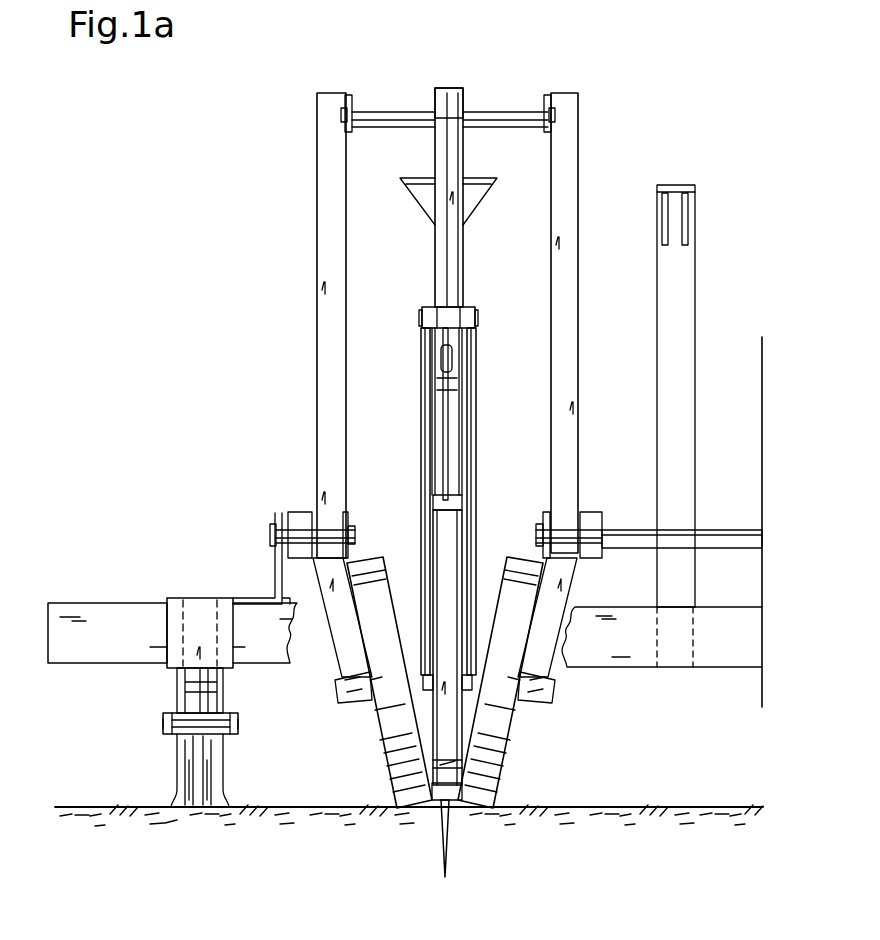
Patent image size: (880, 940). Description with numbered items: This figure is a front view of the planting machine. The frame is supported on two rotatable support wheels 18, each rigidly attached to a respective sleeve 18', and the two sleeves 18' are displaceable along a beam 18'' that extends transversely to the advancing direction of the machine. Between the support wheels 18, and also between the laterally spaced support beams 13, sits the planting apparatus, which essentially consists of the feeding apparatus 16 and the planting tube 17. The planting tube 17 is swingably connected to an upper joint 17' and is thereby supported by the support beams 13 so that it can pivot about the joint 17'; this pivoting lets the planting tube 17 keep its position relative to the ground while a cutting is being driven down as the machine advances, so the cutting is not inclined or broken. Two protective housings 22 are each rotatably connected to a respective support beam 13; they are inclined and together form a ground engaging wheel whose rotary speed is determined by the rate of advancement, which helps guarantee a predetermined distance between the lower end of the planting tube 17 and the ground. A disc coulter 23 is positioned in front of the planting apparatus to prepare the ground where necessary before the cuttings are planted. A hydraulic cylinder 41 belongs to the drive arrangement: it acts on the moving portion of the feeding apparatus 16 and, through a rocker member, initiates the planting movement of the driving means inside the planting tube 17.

The support beam 13 is at (328, 147).
The feeding apparatus 16 is at (425, 208).
The planting tube 17 is at (486, 197).
The upper joint 17' is at (479, 78).
The support wheel 18 is at (171, 737).
The sleeve 18' is at (184, 608).
The beam 18'' is at (167, 663).
The protective housing 22 is at (391, 748).
The disc coulter 23 is at (446, 855).
The hydraulic cylinder 41 is at (450, 540).